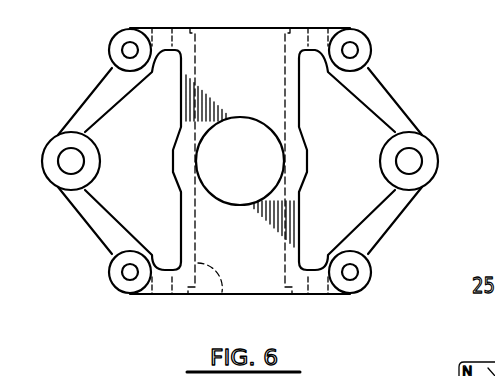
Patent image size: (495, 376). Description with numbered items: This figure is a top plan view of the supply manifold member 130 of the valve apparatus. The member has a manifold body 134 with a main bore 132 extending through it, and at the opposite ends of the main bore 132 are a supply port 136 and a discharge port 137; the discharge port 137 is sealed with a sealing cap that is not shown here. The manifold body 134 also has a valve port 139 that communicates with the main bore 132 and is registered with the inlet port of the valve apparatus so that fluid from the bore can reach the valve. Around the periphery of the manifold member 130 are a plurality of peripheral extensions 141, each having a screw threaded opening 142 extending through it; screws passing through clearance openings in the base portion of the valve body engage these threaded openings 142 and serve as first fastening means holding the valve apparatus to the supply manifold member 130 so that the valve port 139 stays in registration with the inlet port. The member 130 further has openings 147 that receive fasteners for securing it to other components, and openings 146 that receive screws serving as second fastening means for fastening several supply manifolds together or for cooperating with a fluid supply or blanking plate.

The supply manifold member 130 is at (383, 236).
The main bore 132 is at (213, 297).
The manifold body 134 is at (379, 101).
The supply port 136 is at (267, 297).
The discharge port 137 is at (240, 28).
The valve port 139 is at (222, 167).
The peripheral extensions 141 is at (117, 38).
The screw threaded openings 142 is at (124, 50).
The openings 146 is at (162, 37).
The openings 147 is at (73, 162).